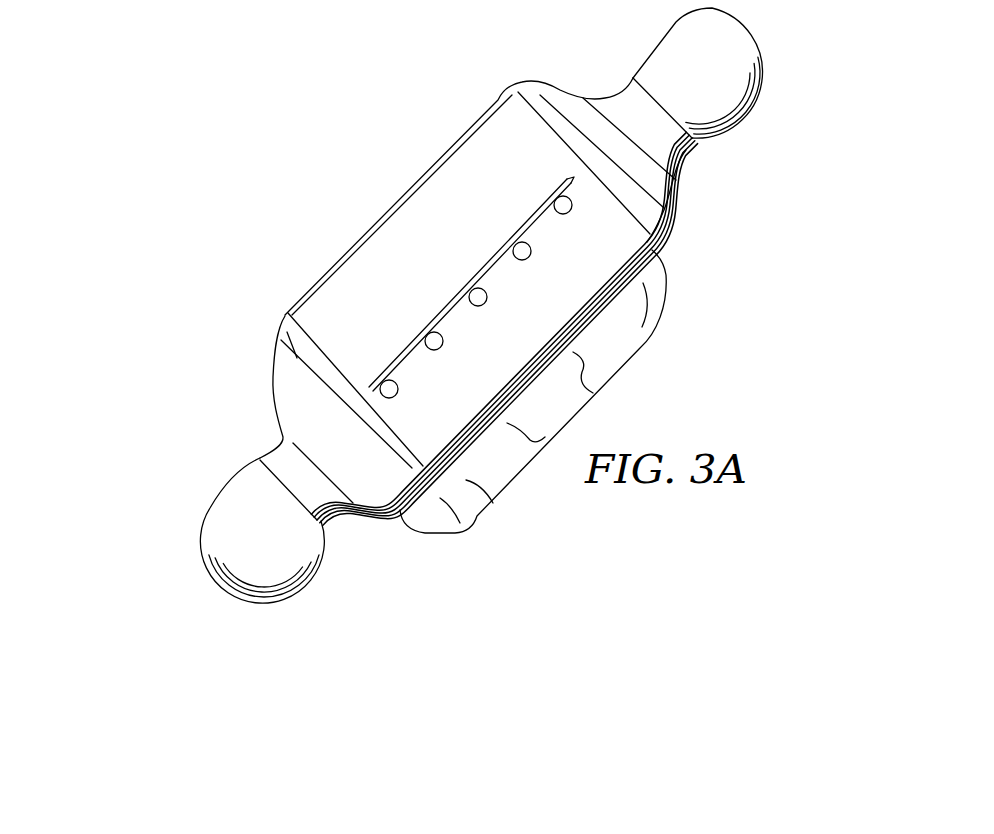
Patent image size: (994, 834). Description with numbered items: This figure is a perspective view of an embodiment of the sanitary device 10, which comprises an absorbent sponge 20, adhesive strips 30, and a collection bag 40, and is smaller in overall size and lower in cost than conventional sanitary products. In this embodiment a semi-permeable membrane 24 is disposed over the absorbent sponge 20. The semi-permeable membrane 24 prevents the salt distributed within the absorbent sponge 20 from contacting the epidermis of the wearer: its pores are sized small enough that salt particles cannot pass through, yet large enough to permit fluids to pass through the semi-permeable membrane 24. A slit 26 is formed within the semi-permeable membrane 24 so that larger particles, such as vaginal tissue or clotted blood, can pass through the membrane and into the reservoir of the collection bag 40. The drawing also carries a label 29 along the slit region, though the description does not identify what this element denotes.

The sanitary device 10 is at (160, 186).
The absorbent sponge 20 is at (295, 360).
The semi-permeable membrane 24 is at (678, 228).
The slit 26 is at (483, 262).
The beads 29 is at (523, 258).
The adhesive strips 30 is at (767, 78).
The collection bag 40 is at (472, 534).